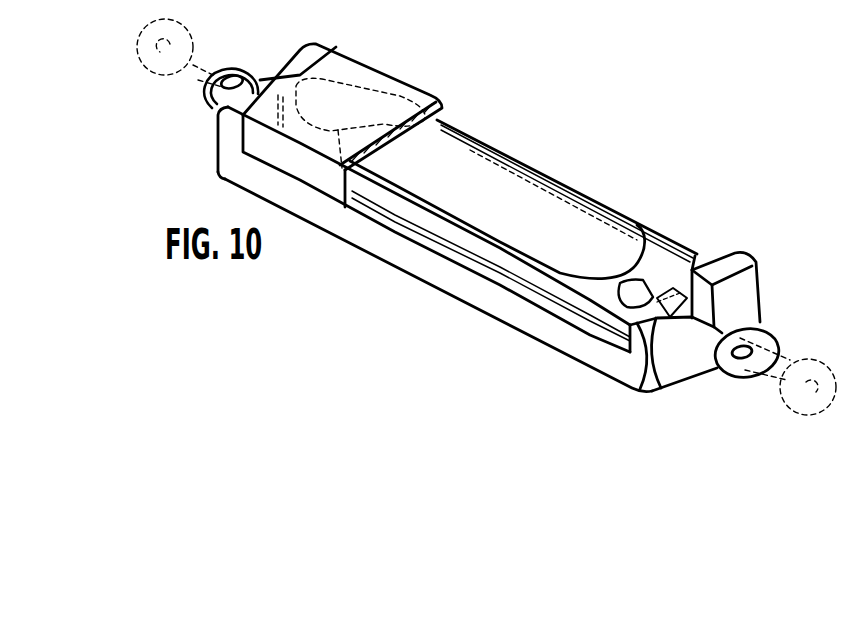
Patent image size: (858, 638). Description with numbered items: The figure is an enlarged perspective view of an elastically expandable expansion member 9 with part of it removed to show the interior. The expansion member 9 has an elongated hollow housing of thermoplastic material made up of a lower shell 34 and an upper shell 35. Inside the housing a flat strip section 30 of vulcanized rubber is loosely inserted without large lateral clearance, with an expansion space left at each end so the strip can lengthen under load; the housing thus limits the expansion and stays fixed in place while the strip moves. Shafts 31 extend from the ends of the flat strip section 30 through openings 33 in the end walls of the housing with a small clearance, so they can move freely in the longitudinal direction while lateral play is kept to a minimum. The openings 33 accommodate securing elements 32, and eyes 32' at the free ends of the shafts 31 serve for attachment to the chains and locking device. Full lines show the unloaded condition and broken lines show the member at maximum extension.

The expansion member 9 is at (576, 140).
The flat strip section 30 is at (500, 204).
The shafts 31 is at (640, 293).
The securing elements 32 is at (762, 320).
The eyes 32' is at (790, 361).
The openings 33 is at (700, 297).
The lower shell 34 is at (513, 313).
The upper shell 35 is at (385, 85).